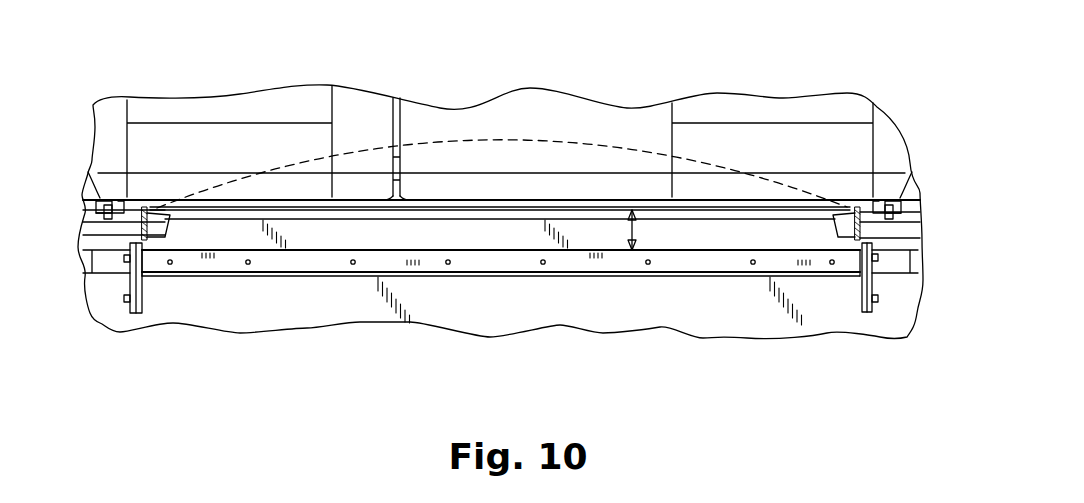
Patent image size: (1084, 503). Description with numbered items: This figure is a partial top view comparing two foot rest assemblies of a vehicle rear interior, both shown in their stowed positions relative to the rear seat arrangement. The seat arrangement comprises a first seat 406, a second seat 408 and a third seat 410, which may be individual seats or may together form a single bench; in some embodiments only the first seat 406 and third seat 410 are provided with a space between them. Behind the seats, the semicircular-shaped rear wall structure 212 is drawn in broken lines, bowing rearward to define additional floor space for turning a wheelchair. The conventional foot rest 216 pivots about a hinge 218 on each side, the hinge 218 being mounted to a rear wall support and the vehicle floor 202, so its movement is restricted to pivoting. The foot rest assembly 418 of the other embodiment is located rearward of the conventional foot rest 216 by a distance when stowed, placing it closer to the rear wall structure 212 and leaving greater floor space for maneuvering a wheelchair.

The vehicle floor 202 is at (244, 307).
The rear wall structure 212 is at (575, 142).
The foot rest 216 is at (335, 262).
The hinge 218 is at (135, 282).
The first seat 406 is at (223, 143).
The second seat 408 is at (481, 123).
The third seat 410 is at (777, 140).
The foot rest assembly 418 is at (500, 212).